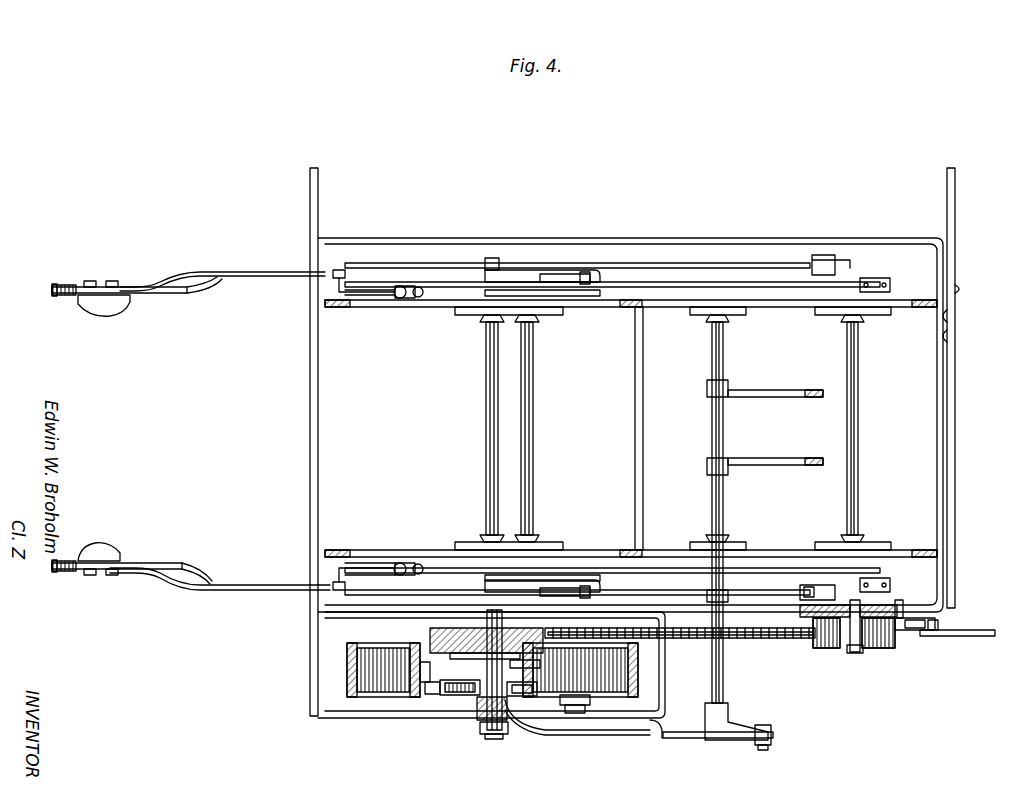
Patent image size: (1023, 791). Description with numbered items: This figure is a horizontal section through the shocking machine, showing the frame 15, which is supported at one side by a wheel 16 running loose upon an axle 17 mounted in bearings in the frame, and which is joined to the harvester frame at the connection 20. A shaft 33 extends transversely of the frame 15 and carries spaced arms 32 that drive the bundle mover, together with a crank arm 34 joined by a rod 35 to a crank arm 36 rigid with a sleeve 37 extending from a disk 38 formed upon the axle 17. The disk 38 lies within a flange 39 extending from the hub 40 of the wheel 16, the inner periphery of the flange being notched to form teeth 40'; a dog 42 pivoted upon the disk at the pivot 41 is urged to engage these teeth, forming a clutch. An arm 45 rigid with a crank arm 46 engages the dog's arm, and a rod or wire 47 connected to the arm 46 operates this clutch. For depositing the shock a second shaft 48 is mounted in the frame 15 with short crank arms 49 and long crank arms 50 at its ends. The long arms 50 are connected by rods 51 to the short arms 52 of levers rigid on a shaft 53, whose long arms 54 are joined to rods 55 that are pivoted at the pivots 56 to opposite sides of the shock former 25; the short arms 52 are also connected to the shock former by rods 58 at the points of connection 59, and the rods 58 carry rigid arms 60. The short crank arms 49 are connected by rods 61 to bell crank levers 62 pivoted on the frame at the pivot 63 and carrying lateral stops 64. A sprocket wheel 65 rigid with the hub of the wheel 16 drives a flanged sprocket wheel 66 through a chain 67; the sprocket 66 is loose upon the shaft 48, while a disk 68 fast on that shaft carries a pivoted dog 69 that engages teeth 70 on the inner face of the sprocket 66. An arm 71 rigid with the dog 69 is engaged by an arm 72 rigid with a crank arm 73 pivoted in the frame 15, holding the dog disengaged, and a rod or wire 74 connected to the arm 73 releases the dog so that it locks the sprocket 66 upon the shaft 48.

The frame 15 is at (643, 240).
The wheel 16 is at (408, 655).
The axle 17 is at (486, 448).
The connection 20 is at (318, 190).
The shock former 25 is at (110, 312).
The arms 32 is at (785, 390).
The shaft 33 is at (712, 508).
The crank arm 34 is at (740, 720).
The rod 35 is at (675, 732).
The crank arm 36 is at (503, 736).
The sleeve 37 is at (480, 715).
The disk 38 is at (460, 695).
The flange 39 is at (420, 682).
The hub 40 is at (504, 649).
The teeth 40' is at (401, 718).
The pivot 41 is at (525, 700).
The dog 42 is at (545, 664).
The arm 45 is at (560, 710).
The crank arm 46 is at (590, 705).
The rod or wire 47 is at (660, 735).
The shaft 48 is at (858, 440).
The short crank arms 49 is at (878, 282).
The long crank arms 50 is at (830, 246).
The rods 51 is at (708, 272).
The short arms 52 is at (505, 270).
The shaft 53 is at (534, 468).
The long arms 54 is at (582, 264).
The rods 55 is at (195, 293).
The pivots 56 is at (112, 281).
The rods 58 is at (275, 262).
The points of connection 59 is at (92, 281).
The arms 60 is at (70, 285).
The rods 61 is at (776, 287).
The bell crank levers 62 is at (375, 300).
The pivot 63 is at (405, 286).
The stops 64 is at (350, 270).
The sprocket wheel 65 is at (560, 628).
The sprocket wheel 66 is at (878, 648).
The chain 67 is at (778, 638).
The disk 68 is at (832, 648).
The dog 69 is at (862, 622).
The teeth 70 is at (797, 612).
The arm 71 is at (900, 615).
The arm 72 is at (918, 630).
The crank arm 73 is at (940, 624).
The rod or wire 74 is at (990, 636).